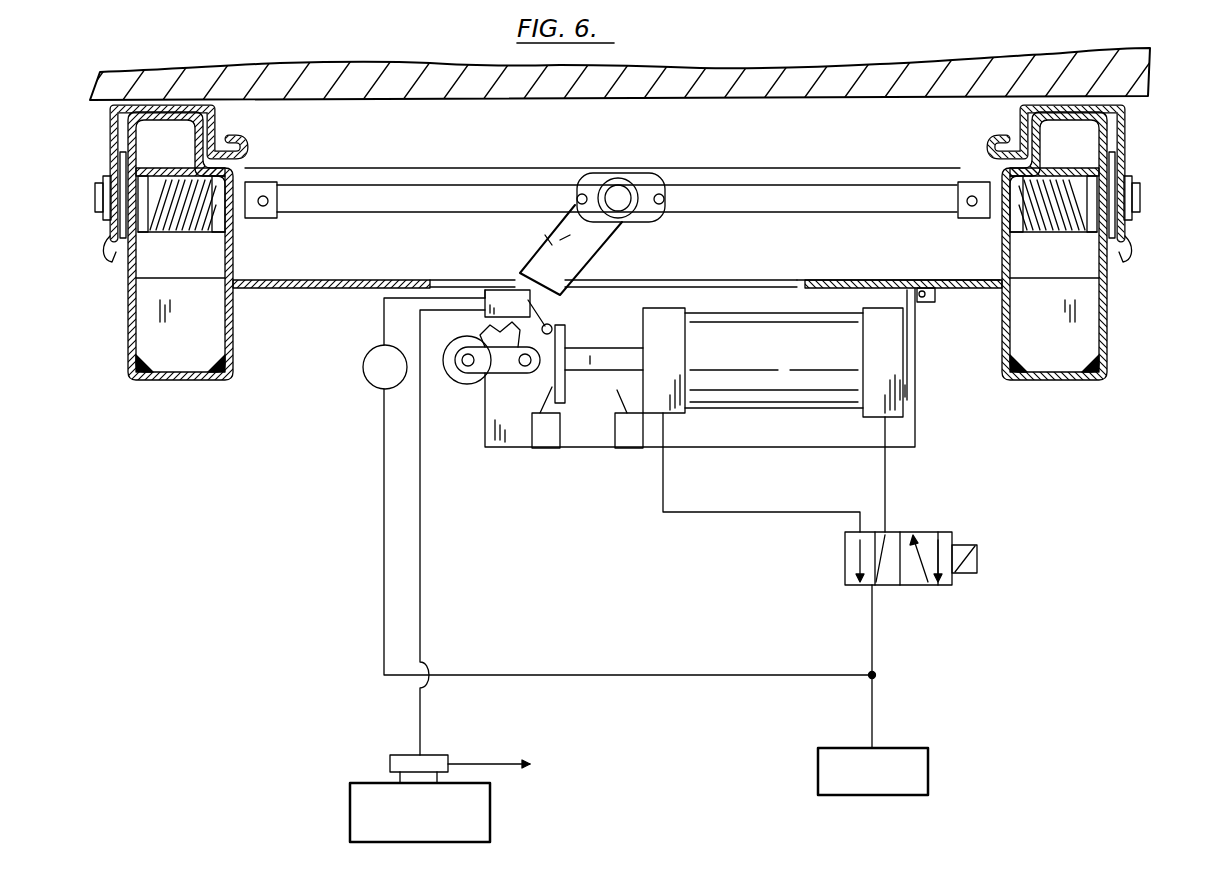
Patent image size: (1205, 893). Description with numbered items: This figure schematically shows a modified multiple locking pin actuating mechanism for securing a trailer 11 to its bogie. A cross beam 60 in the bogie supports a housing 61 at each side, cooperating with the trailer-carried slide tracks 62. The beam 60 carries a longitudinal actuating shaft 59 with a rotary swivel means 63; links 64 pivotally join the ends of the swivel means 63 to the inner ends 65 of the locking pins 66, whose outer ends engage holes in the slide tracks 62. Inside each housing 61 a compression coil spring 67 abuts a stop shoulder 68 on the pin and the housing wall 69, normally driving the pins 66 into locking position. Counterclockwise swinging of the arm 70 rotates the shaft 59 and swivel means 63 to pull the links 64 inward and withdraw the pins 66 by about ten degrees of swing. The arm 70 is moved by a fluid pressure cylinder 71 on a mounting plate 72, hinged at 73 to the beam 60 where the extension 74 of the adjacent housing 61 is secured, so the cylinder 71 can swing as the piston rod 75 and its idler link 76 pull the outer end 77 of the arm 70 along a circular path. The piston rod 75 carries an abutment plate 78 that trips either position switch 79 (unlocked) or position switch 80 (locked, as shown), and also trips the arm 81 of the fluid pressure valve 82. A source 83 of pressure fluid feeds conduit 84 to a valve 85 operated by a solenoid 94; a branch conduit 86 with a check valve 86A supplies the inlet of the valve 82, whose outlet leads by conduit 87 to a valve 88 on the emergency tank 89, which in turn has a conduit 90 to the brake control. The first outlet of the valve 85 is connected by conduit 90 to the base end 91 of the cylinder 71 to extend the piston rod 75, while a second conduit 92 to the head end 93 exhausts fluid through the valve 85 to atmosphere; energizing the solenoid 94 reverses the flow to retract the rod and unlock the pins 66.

The trailer 11 is at (1140, 72).
The longitudinal actuating shaft 59 is at (618, 188).
The cross beam 60 is at (338, 176).
The housing 61 is at (234, 355).
The slide track 62 is at (110, 126).
The rotary swivel means 63 is at (652, 177).
The link 64 is at (363, 213).
The inner end of locking pin 65 is at (263, 185).
The locking pin 66 is at (95, 200).
The compression coil spring 67 is at (198, 230).
The stop shoulder 68 is at (128, 270).
The housing wall 69 is at (237, 264).
The arm 70 is at (600, 238).
The fluid pressure cylinder 71 is at (770, 400).
The mounting plate 72 is at (917, 438).
The hinge 73 is at (928, 302).
The housing extension 74 is at (960, 289).
The piston rod 75 is at (590, 372).
The idler link 76 is at (508, 368).
The outer end of arm 77 is at (455, 376).
The abutment plate 78 is at (568, 340).
The position switch 79 is at (627, 449).
The position switch 80 is at (543, 449).
The valve arm 81 is at (552, 326).
The fluid pressure valve 82 is at (506, 290).
The source of pressure fluid 83 is at (929, 773).
The conduit 84 is at (875, 706).
The valve 85 is at (940, 528).
The branch conduit 86 is at (655, 680).
The check valve 86A is at (368, 385).
The conduit 87 is at (423, 590).
The valve 88 is at (442, 755).
The emergency tank 89 is at (370, 783).
The conduit 90 is at (887, 480).
The base end of cylinder 91 is at (898, 388).
The second conduit 92 is at (729, 514).
The head end of cylinder 93 is at (677, 347).
The solenoid 94 is at (979, 561).